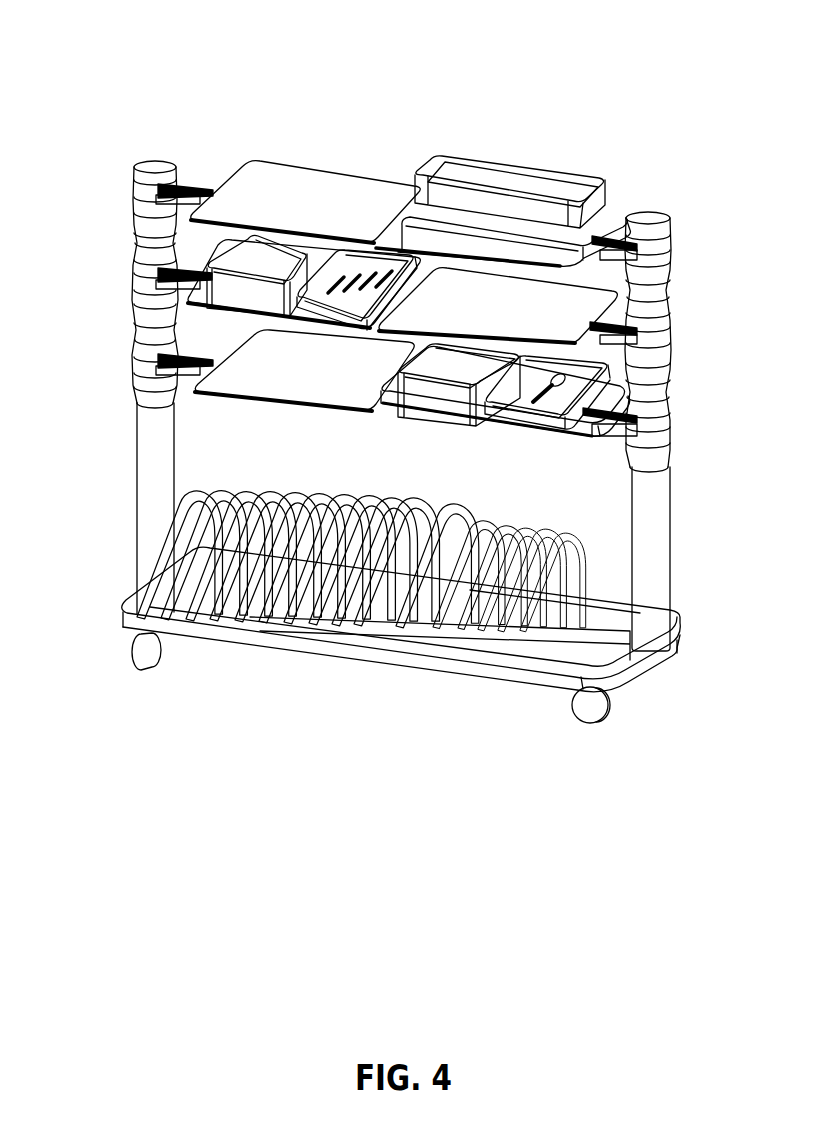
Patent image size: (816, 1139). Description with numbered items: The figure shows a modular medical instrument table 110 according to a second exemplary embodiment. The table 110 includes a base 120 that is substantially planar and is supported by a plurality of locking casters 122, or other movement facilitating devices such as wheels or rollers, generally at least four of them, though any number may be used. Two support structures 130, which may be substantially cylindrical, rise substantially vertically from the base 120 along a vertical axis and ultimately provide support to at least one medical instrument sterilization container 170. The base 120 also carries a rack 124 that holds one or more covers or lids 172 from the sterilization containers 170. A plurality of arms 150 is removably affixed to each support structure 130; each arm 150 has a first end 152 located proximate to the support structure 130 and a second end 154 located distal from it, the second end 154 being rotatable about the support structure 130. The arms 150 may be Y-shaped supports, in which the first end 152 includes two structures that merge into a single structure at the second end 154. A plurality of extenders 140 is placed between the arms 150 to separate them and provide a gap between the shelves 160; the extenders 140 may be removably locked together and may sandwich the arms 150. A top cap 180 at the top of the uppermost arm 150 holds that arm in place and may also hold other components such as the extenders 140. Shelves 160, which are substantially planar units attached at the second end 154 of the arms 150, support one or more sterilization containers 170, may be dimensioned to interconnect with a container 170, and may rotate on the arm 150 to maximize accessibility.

The modular medical instrument table 110 is at (680, 86).
The base 120 is at (563, 657).
The locking casters 122 is at (142, 665).
The rack 124 is at (233, 632).
The support structures 130 is at (147, 472).
The extenders 140 is at (137, 323).
The arms 150 is at (138, 285).
The first end 152 is at (630, 237).
The second end 154 is at (612, 210).
The shelf 160 is at (320, 175).
The medical instrument sterilization container 170 is at (480, 156).
The covers or lids 172 is at (262, 632).
The top cap 180 is at (153, 160).